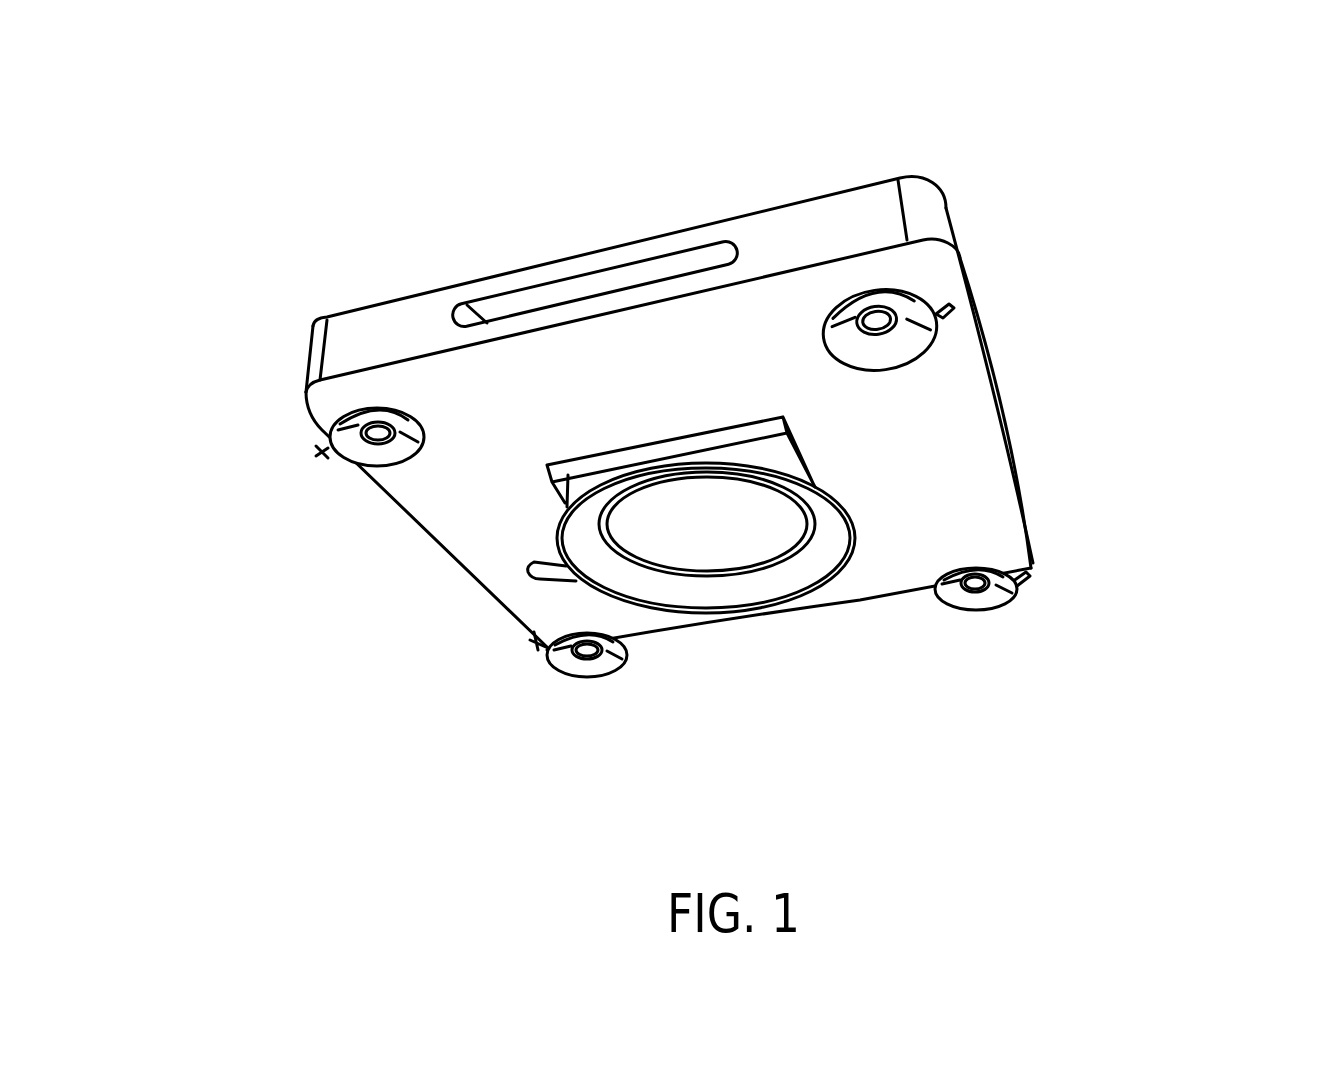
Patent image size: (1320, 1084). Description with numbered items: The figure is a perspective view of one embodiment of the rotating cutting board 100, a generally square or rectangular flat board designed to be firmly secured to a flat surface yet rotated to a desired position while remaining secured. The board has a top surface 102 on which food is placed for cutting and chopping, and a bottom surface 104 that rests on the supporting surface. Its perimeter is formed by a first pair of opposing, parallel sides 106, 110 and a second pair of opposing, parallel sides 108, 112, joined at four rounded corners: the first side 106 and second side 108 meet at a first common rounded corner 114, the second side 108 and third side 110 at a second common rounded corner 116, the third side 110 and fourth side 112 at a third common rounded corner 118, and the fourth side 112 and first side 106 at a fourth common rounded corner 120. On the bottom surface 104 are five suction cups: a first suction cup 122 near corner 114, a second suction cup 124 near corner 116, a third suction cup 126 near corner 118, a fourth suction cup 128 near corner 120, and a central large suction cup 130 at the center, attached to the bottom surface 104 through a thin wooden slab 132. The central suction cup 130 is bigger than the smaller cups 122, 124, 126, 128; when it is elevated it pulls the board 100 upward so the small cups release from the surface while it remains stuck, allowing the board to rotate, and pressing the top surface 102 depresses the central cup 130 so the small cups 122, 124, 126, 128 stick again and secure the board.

The rotating cutting board 100 is at (1092, 250).
The top surface 102 is at (577, 228).
The bottom surface 104 is at (463, 507).
The first side 106 is at (413, 507).
The second side 108 is at (693, 228).
The third side 110 is at (967, 293).
The fourth side 112 is at (718, 627).
The first common rounded corner 114 is at (307, 373).
The second common rounded corner 116 is at (913, 215).
The third common rounded corner 118 is at (1027, 563).
The fourth common rounded corner 120 is at (537, 652).
The first suction cup 122 is at (353, 450).
The second suction cup 124 is at (907, 332).
The third suction cup 126 is at (1017, 592).
The fourth suction cup 128 is at (623, 660).
The central large suction cup 130 is at (767, 570).
The thin wooden slab 132 is at (568, 512).